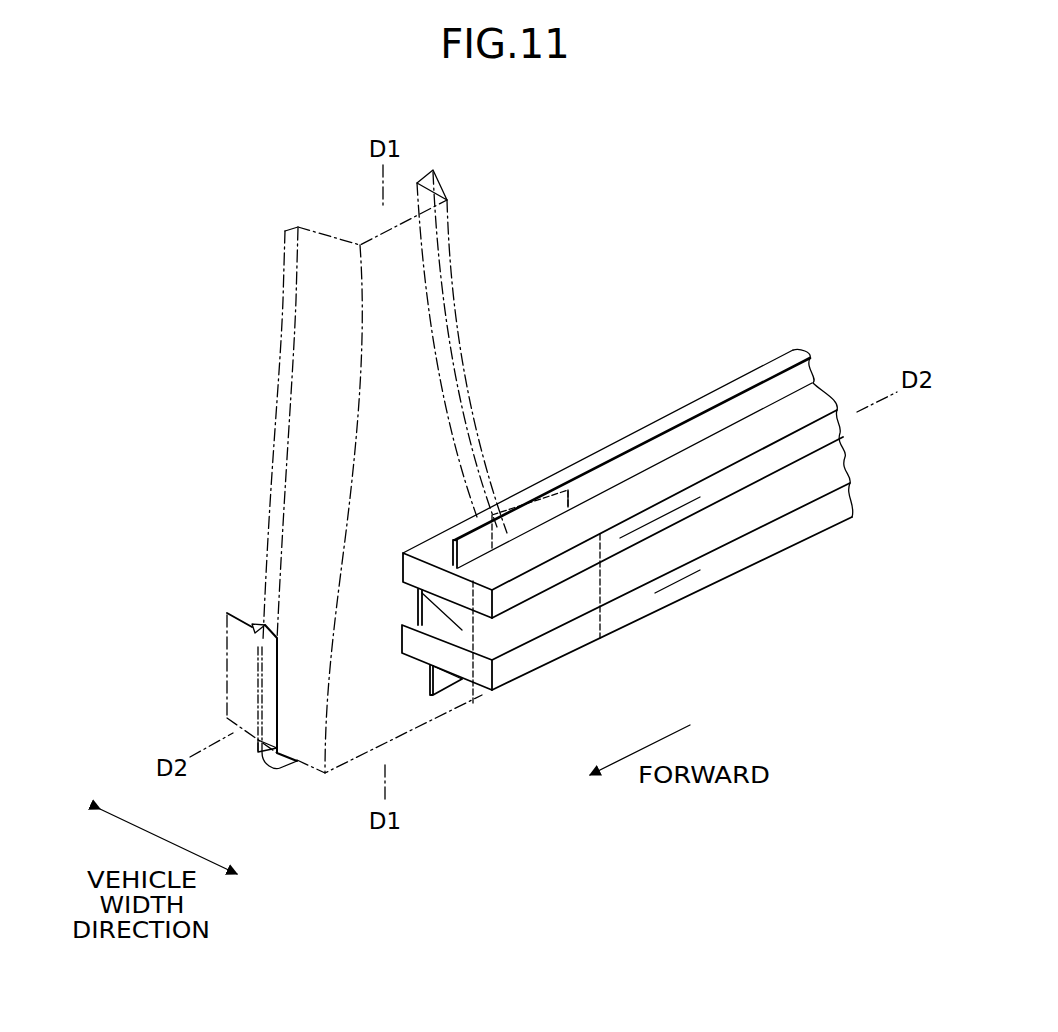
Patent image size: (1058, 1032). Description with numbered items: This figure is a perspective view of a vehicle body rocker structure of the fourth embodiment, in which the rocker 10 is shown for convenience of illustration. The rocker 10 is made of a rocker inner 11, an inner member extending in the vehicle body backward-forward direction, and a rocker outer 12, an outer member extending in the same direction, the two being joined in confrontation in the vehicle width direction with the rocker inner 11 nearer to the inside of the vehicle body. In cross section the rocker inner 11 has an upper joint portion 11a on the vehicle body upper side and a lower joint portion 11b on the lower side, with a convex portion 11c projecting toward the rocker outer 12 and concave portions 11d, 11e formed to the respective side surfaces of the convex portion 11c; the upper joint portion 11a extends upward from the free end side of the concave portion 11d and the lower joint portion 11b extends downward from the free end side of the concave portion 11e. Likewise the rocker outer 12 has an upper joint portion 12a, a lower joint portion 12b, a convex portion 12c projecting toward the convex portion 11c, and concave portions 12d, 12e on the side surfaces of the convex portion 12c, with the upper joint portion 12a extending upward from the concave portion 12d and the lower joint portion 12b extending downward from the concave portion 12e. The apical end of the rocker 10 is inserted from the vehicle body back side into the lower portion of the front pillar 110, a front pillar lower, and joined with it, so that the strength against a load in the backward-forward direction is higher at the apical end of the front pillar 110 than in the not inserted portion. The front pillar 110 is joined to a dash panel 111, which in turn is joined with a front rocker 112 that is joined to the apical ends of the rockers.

The rocker 10 is at (557, 380).
The rocker inner 11 is at (690, 403).
The upper joint portion 11a is at (452, 556).
The lower joint portion 11b is at (432, 682).
The convex portion 11c is at (418, 600).
The concave portion 11d is at (403, 568).
The concave portion 11e is at (402, 632).
The rocker outer 12 is at (708, 452).
The upper joint portion 12a is at (603, 480).
The lower joint portion 12b is at (447, 683).
The convex portion 12c is at (428, 608).
The concave portion 12d is at (620, 538).
The concave portion 12e is at (655, 593).
The front pillar 110 is at (333, 277).
The dash panel 111 is at (237, 648).
The front rocker 112 is at (232, 612).